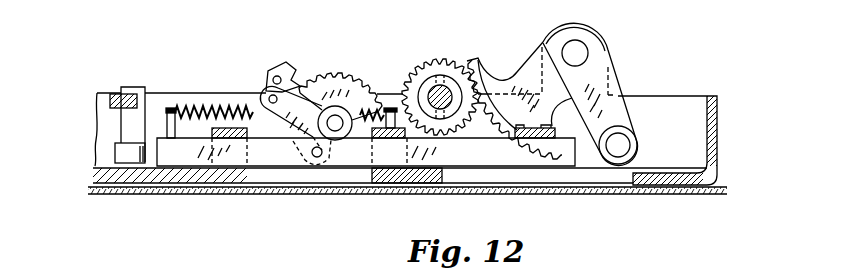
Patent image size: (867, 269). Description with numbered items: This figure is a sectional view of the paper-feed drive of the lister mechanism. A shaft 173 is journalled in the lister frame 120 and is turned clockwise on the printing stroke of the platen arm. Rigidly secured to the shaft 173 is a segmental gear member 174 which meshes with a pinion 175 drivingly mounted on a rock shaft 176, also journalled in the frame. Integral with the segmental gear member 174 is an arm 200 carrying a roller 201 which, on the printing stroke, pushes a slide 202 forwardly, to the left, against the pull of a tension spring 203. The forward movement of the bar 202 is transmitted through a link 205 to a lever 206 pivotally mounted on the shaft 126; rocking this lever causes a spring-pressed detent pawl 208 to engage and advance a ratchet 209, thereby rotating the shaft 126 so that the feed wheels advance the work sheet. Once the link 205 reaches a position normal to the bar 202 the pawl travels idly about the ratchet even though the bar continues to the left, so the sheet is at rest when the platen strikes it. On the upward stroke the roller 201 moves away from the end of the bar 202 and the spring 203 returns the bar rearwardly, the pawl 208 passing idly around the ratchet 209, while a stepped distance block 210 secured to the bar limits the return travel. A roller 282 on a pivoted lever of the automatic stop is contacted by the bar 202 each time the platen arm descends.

The lister frame 120 is at (713, 140).
The shaft 126 is at (335, 123).
The shaft 173 is at (582, 47).
The segmental gear member 174 is at (517, 72).
The pinion 175 is at (452, 62).
The rock shaft 176 is at (428, 90).
The arm 200 is at (617, 85).
The roller 201 is at (636, 140).
The slide 202 is at (485, 158).
The tension spring 203 is at (197, 103).
The link 205 is at (263, 113).
The lever 206 is at (310, 103).
The pawl 208 is at (297, 85).
The ratchet 209 is at (358, 80).
The stepped member 210 is at (549, 128).
The roller 282 is at (117, 152).